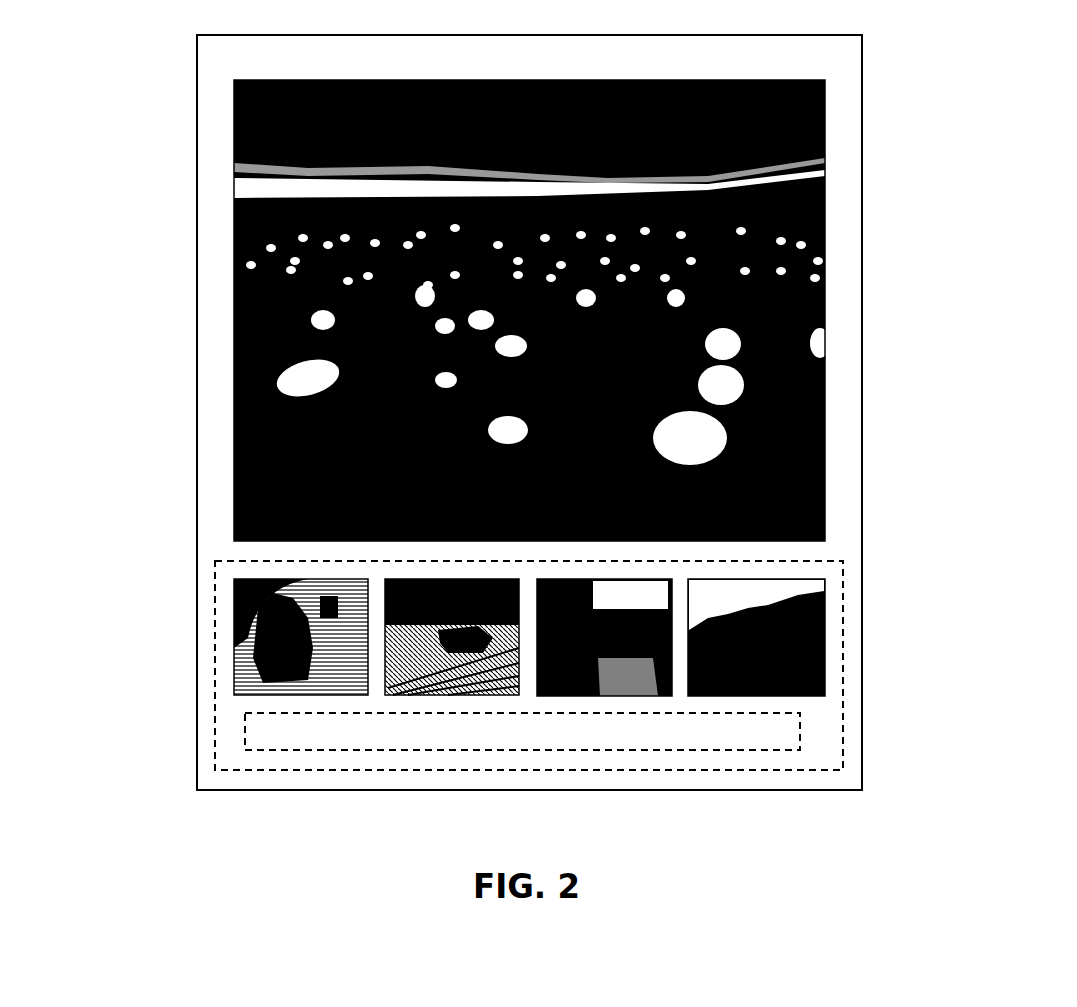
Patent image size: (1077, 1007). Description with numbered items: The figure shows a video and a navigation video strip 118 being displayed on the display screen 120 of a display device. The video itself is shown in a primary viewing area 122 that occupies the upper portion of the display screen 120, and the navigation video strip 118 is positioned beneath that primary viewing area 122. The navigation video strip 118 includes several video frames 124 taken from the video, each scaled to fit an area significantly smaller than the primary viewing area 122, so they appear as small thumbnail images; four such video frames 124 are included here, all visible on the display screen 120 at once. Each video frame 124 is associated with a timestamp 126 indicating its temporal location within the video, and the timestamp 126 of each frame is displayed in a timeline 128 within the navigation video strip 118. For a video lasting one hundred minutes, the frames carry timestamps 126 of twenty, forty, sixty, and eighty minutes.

The navigation video strip 118 is at (838, 593).
The display screen 120 is at (186, 212).
The primary viewing area 122 is at (815, 246).
The video frame 124 is at (225, 628).
The timestamp 126 is at (610, 737).
The timeline 128 is at (794, 730).